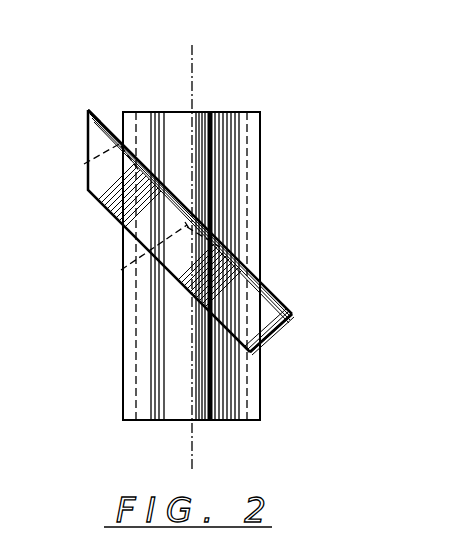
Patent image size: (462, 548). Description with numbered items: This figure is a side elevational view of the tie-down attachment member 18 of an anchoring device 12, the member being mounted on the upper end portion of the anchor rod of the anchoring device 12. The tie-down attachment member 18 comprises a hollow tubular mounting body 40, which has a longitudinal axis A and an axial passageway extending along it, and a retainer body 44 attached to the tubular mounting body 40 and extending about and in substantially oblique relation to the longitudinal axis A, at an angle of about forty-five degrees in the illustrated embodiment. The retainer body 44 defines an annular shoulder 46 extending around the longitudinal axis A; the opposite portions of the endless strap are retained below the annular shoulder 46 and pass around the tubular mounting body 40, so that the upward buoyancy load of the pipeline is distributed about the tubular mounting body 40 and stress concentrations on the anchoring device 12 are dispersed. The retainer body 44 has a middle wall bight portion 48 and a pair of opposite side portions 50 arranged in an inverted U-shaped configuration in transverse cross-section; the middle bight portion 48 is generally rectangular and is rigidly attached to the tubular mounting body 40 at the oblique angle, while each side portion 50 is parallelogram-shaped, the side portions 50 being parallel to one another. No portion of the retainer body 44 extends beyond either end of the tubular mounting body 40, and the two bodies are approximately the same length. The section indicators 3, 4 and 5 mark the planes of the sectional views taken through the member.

The anchoring device 12 is at (243, 79).
The tie-down attachment member 18 is at (160, 84).
The tubular mounting body 40 is at (280, 179).
The retainer body 44 is at (282, 281).
The annular shoulder 46 is at (86, 163).
The middle wall bight portion 48 is at (98, 126).
The side portion 50 is at (292, 320).
The longitudinal axis A is at (194, 66).
The section line 3- 3 is at (379, 140).
The section line 4- 4 is at (2, 140).
The section line 5- 5 is at (128, 70).